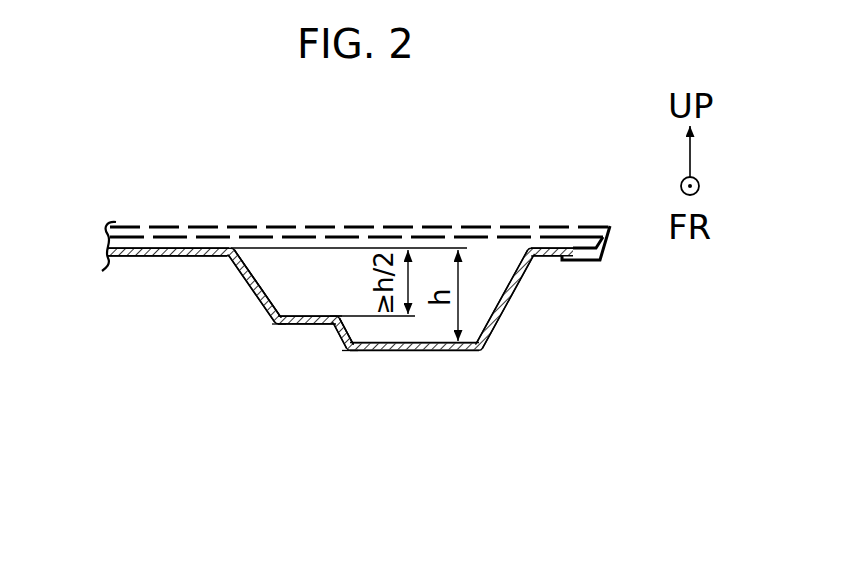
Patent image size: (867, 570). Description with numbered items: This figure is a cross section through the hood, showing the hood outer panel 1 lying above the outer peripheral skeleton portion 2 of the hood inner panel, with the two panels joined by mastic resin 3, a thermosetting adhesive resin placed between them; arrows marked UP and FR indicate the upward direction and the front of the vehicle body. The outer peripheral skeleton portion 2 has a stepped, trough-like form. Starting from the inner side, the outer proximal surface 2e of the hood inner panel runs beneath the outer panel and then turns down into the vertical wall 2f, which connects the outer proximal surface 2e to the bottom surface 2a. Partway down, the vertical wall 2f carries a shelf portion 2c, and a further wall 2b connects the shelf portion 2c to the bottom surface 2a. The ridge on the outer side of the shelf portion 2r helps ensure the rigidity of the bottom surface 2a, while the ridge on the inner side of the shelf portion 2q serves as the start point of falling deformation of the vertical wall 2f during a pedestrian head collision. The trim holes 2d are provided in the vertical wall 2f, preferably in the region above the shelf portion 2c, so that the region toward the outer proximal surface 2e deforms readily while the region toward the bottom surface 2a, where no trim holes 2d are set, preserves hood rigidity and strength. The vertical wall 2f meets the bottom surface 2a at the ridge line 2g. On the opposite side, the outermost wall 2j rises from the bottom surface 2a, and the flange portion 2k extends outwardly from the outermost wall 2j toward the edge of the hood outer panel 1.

The hood outer panel 1 is at (452, 223).
The outer peripheral skeleton portion 2 is at (523, 332).
The mastic resin 3 is at (167, 242).
The bottom surface 2a is at (432, 352).
The wall 2b is at (337, 340).
The shelf portion 2c is at (323, 325).
The trim hole 2d is at (257, 291).
The outer proximal surface 2e is at (163, 257).
The vertical wall 2f is at (260, 482).
The ridge line 2g is at (346, 353).
The outermost wall 2j is at (515, 288).
The flange portion 2k is at (548, 258).
The ridge on the inner side of the shelf portion 2q is at (272, 327).
The ridge on the outer side of the shelf portion 2r is at (337, 312).